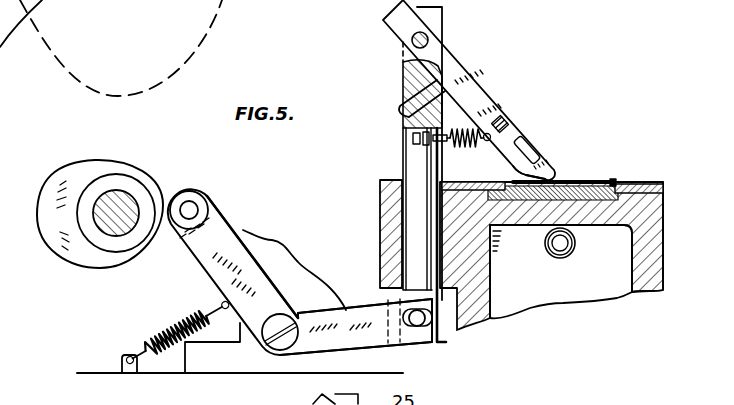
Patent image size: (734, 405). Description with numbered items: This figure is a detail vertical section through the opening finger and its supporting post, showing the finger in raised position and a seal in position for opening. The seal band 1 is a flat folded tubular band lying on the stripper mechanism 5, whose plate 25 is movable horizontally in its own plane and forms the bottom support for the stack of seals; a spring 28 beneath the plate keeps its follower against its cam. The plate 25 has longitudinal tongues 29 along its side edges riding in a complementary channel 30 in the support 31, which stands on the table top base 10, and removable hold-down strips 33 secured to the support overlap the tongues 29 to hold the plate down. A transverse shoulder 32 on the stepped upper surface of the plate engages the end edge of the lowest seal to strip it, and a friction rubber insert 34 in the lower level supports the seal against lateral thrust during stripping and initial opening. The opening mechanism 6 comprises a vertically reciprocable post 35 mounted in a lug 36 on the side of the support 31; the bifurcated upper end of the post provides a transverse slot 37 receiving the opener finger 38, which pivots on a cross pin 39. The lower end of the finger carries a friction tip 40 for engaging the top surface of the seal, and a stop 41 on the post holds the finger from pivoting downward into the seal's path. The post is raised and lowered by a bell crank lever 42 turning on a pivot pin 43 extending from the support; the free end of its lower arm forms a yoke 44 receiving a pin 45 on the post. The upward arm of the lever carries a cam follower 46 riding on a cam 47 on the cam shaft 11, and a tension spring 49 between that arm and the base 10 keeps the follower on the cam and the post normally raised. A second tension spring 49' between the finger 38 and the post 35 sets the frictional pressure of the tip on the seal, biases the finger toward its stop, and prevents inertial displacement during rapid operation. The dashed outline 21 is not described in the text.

The seal band 1 is at (581, 177).
The stripper mechanism 5 is at (624, 185).
The opening mechanism 6 is at (509, 100).
The table top base 10 is at (100, 369).
The cam shaft 11 is at (122, 193).
The drum 21 is at (111, 48).
The plate 25 is at (525, 198).
The spring 28 is at (552, 256).
The longitudinal tongues 29 is at (455, 206).
The channel 30 is at (632, 201).
The support 31 is at (650, 296).
The transverse shoulder 32 is at (614, 178).
The hold-down strips 33 is at (481, 187).
The friction rubber insert 34 is at (584, 194).
The post 35 is at (403, 158).
The lug 36 is at (380, 206).
The transverse slot 37 is at (440, 18).
The opener finger 38 is at (490, 98).
The cross pin 39 is at (430, 41).
The friction tip 40 is at (546, 161).
The stop 41 is at (412, 60).
The bell crank lever 42 is at (353, 304).
The pivot pin 43 is at (283, 324).
The yoke 44 is at (411, 333).
The pin 45 is at (421, 321).
The cam follower 46 is at (210, 194).
The cam 47 is at (150, 177).
The tension spring 49 is at (177, 326).
The tension spring 49' is at (452, 146).